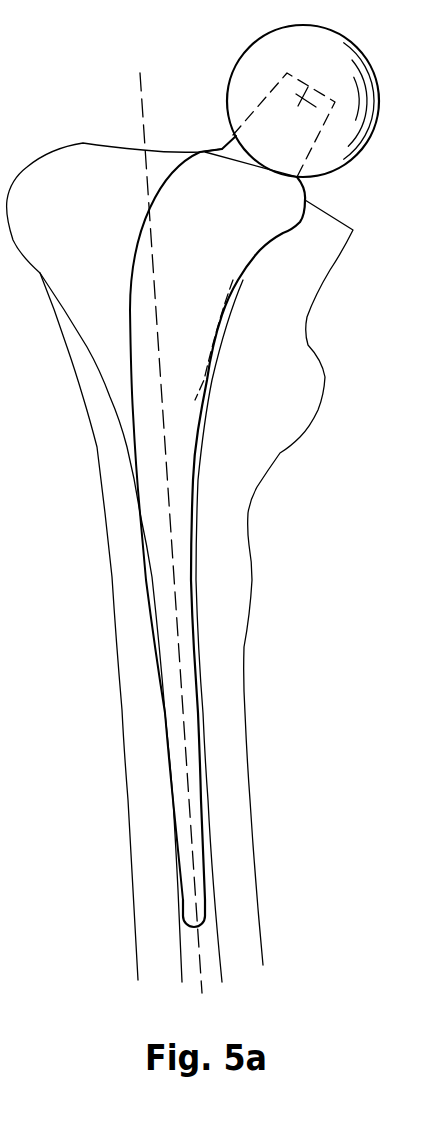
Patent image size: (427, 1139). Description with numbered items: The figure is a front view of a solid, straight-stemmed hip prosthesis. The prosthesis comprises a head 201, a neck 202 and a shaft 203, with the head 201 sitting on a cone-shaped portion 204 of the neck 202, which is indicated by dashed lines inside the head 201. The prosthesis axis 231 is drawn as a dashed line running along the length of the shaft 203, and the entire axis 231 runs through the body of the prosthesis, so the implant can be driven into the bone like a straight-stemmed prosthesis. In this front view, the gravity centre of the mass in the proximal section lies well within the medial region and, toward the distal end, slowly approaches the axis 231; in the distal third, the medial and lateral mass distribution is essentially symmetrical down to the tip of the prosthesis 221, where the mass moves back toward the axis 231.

The head 201 is at (250, 43).
The neck 202 is at (190, 152).
The shaft 203 is at (184, 538).
The cone-shaped portion 204 is at (262, 96).
The tip of the prosthesis 221 is at (191, 931).
The prosthesis axis 231 is at (140, 98).